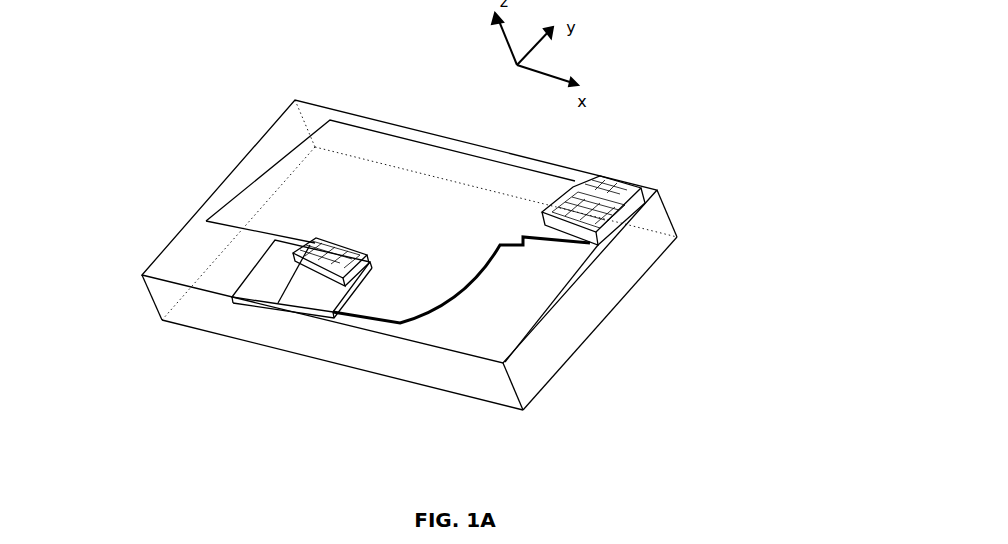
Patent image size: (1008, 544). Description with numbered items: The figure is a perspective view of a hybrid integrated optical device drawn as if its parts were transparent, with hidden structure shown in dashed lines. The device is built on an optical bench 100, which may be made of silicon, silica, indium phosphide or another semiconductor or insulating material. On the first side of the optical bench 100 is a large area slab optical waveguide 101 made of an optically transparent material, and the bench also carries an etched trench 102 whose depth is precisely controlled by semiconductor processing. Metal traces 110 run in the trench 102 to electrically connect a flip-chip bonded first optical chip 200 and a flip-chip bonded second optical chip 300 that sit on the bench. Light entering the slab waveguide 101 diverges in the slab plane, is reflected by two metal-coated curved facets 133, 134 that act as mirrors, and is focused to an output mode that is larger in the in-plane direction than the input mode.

The optical bench 100 is at (473, 383).
The large area slab optical waveguide 101 is at (467, 248).
The trench 102 is at (268, 285).
The metal traces 110 is at (232, 297).
The curved facet 133 is at (478, 278).
The curved facet 134 is at (297, 137).
The first optical chip 200 is at (316, 238).
The second optical chip 300 is at (605, 176).